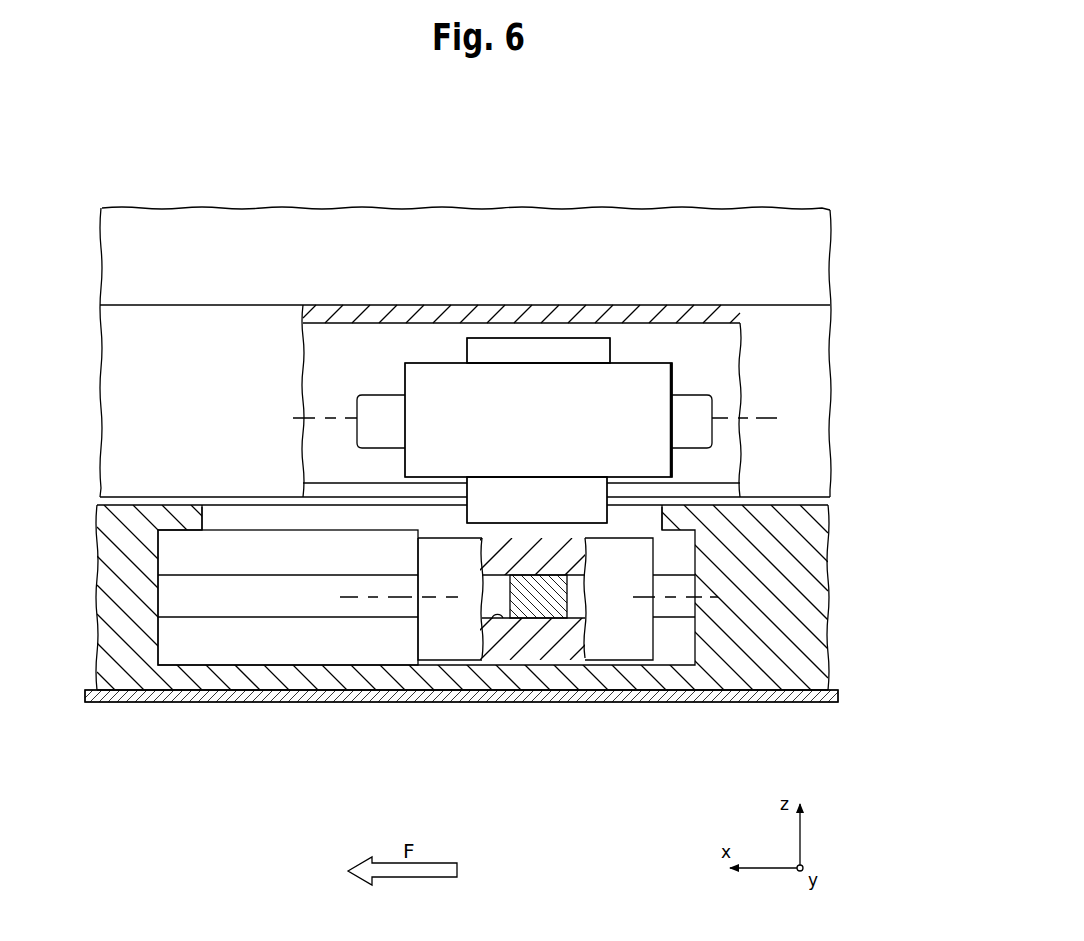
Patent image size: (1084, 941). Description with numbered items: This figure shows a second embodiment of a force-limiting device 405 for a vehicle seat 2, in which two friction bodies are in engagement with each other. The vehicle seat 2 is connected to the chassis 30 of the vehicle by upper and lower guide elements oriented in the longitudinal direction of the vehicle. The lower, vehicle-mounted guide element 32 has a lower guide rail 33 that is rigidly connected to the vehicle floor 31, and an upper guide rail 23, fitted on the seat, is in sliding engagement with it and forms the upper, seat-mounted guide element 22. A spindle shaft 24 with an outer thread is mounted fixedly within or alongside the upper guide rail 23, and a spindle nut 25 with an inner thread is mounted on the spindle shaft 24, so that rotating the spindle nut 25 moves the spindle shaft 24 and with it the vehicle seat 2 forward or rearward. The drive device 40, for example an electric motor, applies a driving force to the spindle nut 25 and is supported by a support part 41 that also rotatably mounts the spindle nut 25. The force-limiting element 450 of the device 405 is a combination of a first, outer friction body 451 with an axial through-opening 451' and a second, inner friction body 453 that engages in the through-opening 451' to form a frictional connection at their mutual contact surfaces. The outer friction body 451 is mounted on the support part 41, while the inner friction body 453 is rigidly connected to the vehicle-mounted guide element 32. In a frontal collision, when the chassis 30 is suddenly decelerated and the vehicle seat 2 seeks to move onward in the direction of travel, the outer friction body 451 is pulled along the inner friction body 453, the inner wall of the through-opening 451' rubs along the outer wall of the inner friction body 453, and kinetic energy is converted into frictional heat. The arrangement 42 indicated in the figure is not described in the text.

The vehicle seat 2 is at (803, 244).
The upper, seat-mounted guide element 22 is at (834, 467).
The upper guide rail 23 is at (802, 383).
The spindle shaft 24 is at (695, 398).
The spindle nut 25 is at (627, 385).
The chassis 30 is at (620, 706).
The vehicle floor 31 is at (713, 704).
The lower, vehicle-mounted guide element 32 is at (828, 643).
The lower guide rail 33 is at (805, 560).
The drive device 40 is at (502, 497).
The support part 41 is at (560, 506).
The drive unit 42 is at (381, 362).
The force-limiting device 405 is at (258, 520).
The force-limiting element 450 is at (342, 562).
The first, outer friction body 451 is at (520, 654).
The axial through-opening 451' is at (532, 654).
The second, inner friction body 453 is at (327, 605).